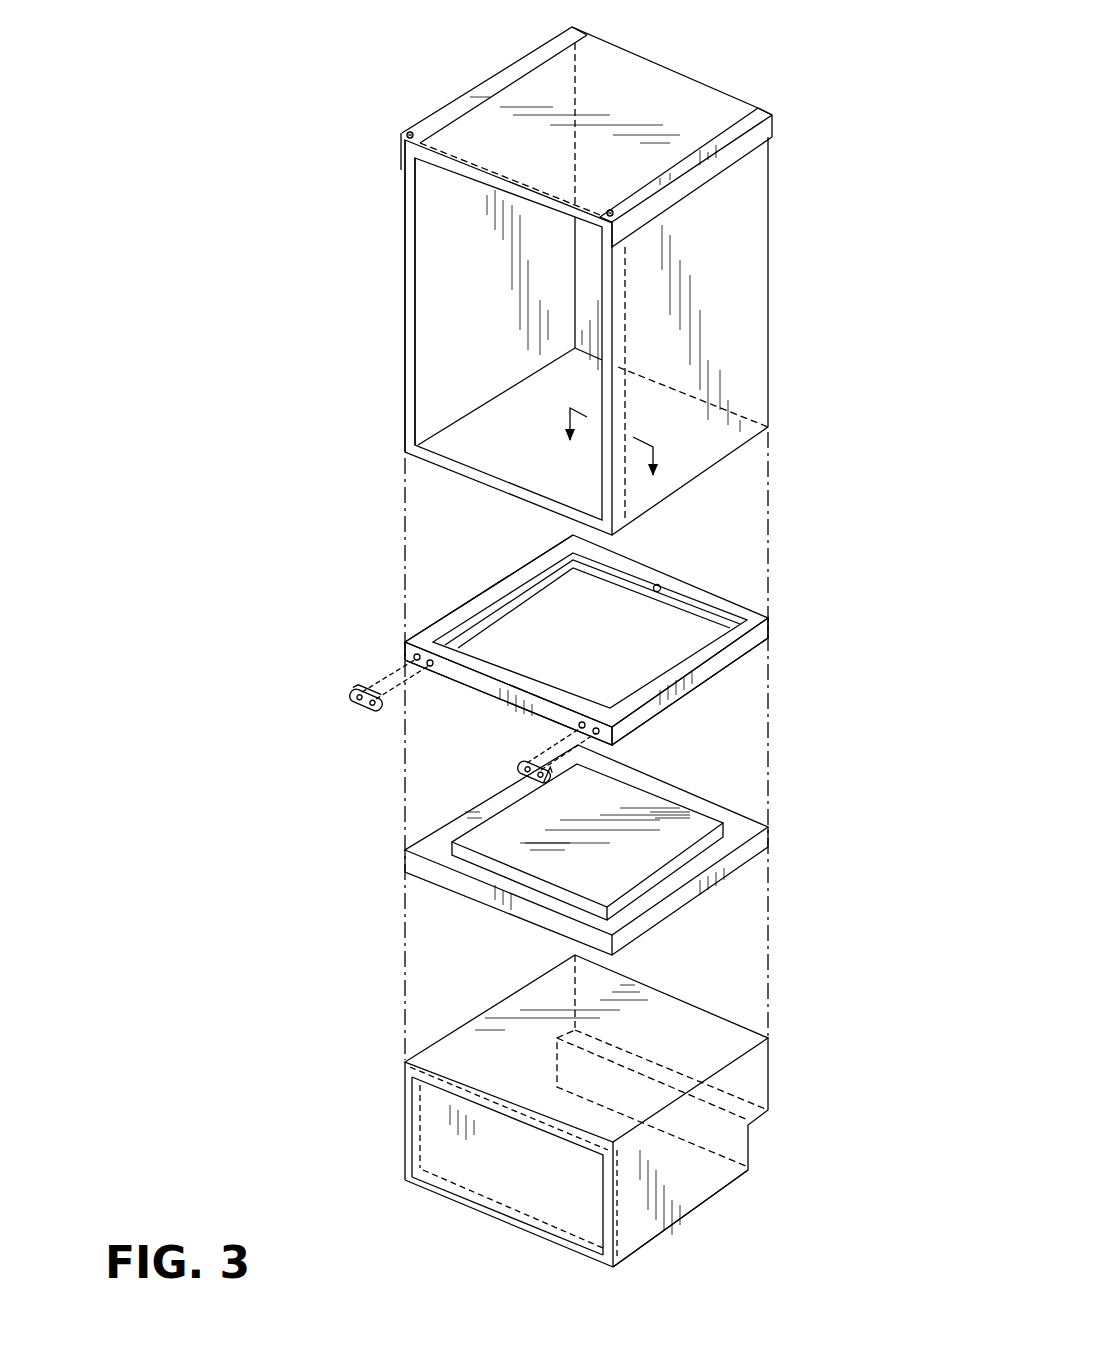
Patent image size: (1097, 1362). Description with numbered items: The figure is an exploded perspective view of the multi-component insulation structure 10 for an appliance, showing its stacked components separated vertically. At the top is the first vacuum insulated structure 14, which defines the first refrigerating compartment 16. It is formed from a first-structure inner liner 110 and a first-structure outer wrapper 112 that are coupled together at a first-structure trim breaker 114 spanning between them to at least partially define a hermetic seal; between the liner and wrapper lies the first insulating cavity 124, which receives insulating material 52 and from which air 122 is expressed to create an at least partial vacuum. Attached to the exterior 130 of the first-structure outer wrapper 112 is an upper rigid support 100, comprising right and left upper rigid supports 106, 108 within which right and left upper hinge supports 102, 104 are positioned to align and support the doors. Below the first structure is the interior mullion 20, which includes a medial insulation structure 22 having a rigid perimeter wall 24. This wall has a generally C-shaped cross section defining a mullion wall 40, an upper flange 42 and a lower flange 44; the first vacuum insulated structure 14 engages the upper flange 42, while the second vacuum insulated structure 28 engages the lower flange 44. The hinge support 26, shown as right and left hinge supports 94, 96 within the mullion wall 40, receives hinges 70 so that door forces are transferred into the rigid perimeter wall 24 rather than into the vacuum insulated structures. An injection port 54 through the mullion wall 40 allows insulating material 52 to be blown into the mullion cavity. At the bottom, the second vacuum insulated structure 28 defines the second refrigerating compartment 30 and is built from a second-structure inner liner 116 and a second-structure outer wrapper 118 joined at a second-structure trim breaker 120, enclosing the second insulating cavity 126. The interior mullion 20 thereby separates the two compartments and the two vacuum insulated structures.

The multi-component insulation structure 10 is at (266, 503).
The first vacuum insulated structure 14 is at (787, 293).
The first refrigerating compartment 16 is at (458, 290).
The interior mullion 20 is at (717, 684).
The medial insulation structure 22 is at (725, 798).
The rigid perimeter wall 24 is at (497, 567).
The hinge support 26 is at (428, 643).
The second vacuum insulated structure 28 is at (398, 1077).
The second refrigerating compartment 30 is at (582, 1190).
The mullion wall 40 is at (463, 680).
The upper flange 42 is at (742, 608).
The lower flange 44 is at (718, 597).
The insulating material 52 is at (433, 847).
The injection port 54 is at (659, 585).
The hinge 70 is at (350, 695).
The right hinge support 94 is at (597, 722).
The left hinge support 96 is at (412, 655).
The upper rigid support 100 is at (458, 88).
The right upper hinge support 102 is at (618, 213).
The left upper hinge support 104 is at (406, 138).
The right upper rigid support 106 is at (725, 147).
The left upper rigid support 108 is at (410, 122).
The first-structure inner liner 110 is at (458, 362).
The first-structure outer wrapper 112 is at (702, 115).
The first-structure trim breaker 114 is at (410, 243).
The second-structure inner liner 116 is at (435, 1130).
The second-structure outer wrapper 118 is at (700, 1025).
The second-structure trim breaker 120 is at (462, 1198).
The air 122 is at (655, 65).
The first insulating cavity 124 is at (740, 362).
The second insulating cavity 126 is at (697, 1168).
The exterior 130 is at (508, 147).